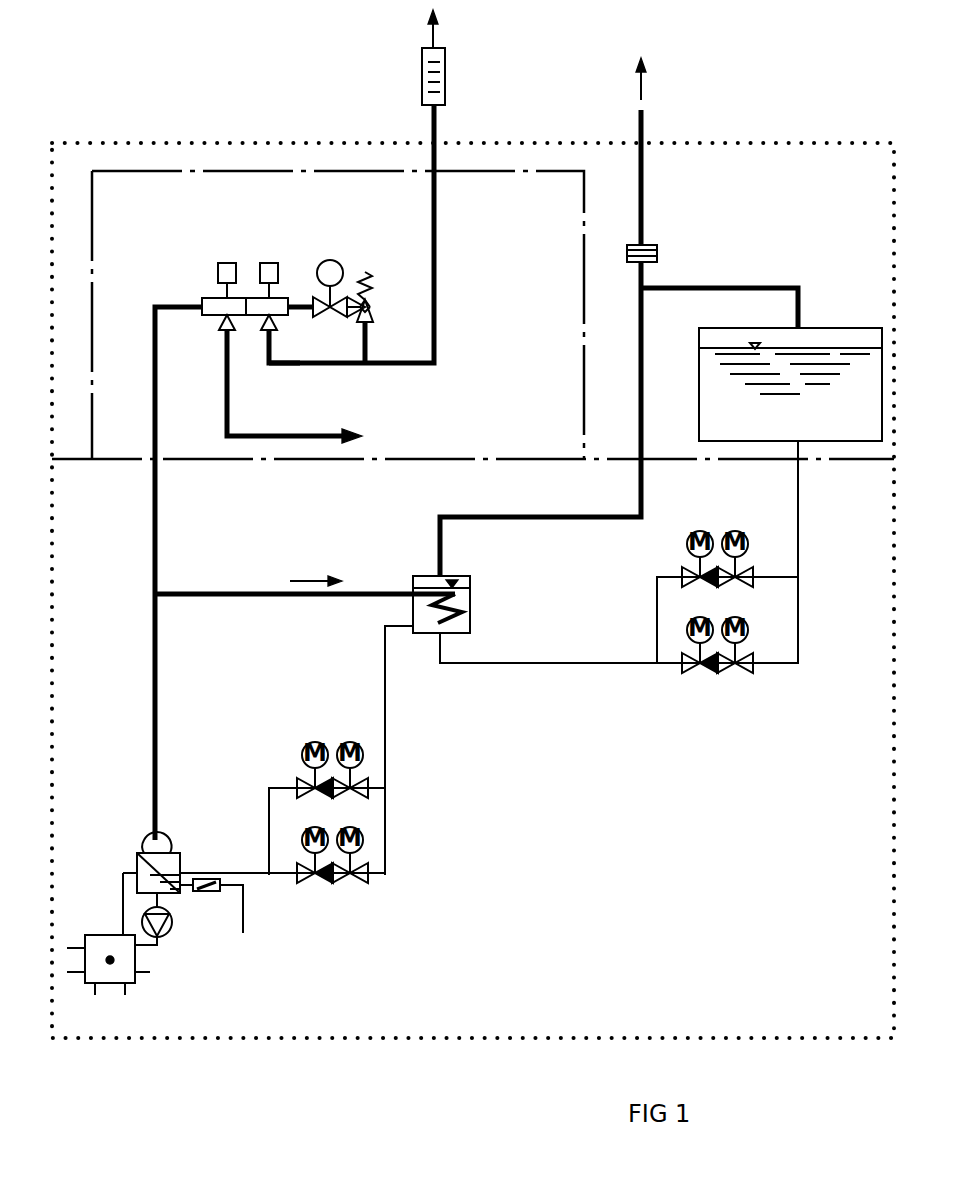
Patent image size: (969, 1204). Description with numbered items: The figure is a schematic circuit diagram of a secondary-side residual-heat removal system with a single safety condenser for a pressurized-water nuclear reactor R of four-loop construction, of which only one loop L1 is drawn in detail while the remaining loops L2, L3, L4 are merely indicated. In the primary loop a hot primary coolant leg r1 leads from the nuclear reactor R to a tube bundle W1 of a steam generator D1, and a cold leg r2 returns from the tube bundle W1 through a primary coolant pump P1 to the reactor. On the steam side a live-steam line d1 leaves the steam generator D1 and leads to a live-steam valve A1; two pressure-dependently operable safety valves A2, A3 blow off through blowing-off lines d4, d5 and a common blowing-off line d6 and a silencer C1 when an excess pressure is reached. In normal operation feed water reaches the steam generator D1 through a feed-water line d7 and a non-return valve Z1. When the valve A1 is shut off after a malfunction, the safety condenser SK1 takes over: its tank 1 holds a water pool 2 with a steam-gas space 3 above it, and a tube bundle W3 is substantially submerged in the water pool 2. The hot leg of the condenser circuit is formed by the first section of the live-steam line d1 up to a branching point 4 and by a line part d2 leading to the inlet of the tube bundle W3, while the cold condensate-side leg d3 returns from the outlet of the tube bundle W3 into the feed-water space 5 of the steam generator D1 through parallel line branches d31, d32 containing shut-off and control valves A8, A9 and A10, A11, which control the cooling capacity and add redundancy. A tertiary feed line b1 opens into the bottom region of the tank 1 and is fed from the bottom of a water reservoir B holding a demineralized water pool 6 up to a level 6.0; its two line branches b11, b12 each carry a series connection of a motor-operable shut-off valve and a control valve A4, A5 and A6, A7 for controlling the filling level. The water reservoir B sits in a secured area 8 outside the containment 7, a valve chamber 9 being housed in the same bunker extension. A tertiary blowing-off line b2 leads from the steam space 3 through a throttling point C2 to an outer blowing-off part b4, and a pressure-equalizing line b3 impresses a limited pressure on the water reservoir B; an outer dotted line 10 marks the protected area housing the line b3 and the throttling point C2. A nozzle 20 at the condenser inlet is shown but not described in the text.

The outer dotted line 10 is at (548, 143).
The valve chamber 9 is at (493, 423).
The containment 7 is at (791, 787).
The secured area 8 is at (676, 363).
The silencer C1 is at (445, 70).
The throttling point C2 is at (655, 245).
The common blowing-off line d6 is at (437, 312).
The blowing-off line d4 is at (290, 363).
The blowing-off line d5 is at (368, 349).
The live-steam line d1 is at (255, 436).
The live-steam valve A1 is at (227, 263).
The safety valve A2 is at (269, 263).
The safety valve A3 is at (365, 272).
The outer part of the blowing-off line b4 is at (643, 120).
The tertiary blowing-off line b2 is at (641, 390).
The pressure-equalizing line b3 is at (716, 288).
The water reservoir B is at (699, 392).
The demineralized water pool 6 is at (715, 425).
The level 6.0 is at (757, 343).
The tertiary feed line b1 is at (799, 508).
The line branch b11 is at (657, 576).
The line branch b12 is at (660, 664).
The motor-operable shut-off valve A4 is at (700, 588).
The control valve A5 is at (748, 577).
The motor-operable shut-off valve A6 is at (700, 675).
The control valve A7 is at (748, 663).
The safety condenser SK1 is at (551, 557).
The inlet 20 is at (452, 576).
The steam-gas space 3 is at (413, 580).
The tank 1 is at (413, 610).
The water pool 2 is at (470, 604).
The tube bundle W3 is at (470, 621).
The line part d2 is at (228, 594).
The branching point 4 is at (155, 593).
The line part d3 is at (386, 684).
The line branch d31 is at (269, 818).
The line branch d32 is at (300, 876).
The shut-off and control valve A8 is at (305, 780).
The shut-off and control valve A9 is at (362, 778).
The shut-off and control valve A10 is at (325, 885).
The shut-off and control valve A11 is at (366, 878).
The steam generator D1 is at (137, 857).
The tube bundle W1 is at (137, 870).
The feed-water space 5 is at (180, 855).
The non-return valve Z1 is at (205, 892).
The feed-water line d7 is at (244, 905).
The primary coolant pump P1 is at (172, 925).
The hot primary coolant leg r1 is at (123, 905).
The cold leg r2 is at (146, 946).
The nuclear reactor R is at (168, 1012).
The loop L1 is at (150, 952).
The loop L2 is at (95, 925).
The loop L3 is at (93, 985).
The loop L4 is at (125, 986).